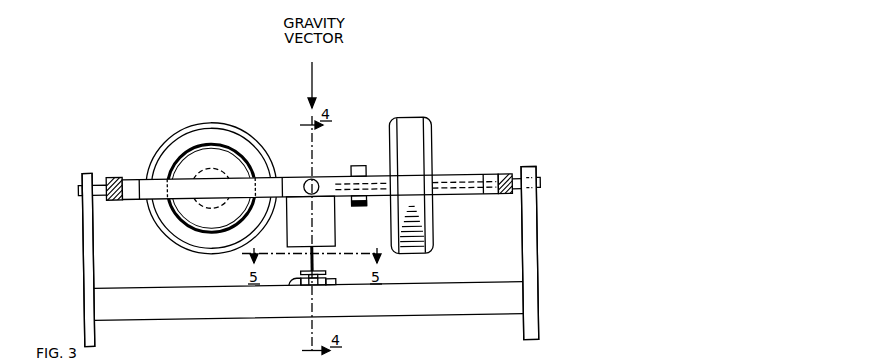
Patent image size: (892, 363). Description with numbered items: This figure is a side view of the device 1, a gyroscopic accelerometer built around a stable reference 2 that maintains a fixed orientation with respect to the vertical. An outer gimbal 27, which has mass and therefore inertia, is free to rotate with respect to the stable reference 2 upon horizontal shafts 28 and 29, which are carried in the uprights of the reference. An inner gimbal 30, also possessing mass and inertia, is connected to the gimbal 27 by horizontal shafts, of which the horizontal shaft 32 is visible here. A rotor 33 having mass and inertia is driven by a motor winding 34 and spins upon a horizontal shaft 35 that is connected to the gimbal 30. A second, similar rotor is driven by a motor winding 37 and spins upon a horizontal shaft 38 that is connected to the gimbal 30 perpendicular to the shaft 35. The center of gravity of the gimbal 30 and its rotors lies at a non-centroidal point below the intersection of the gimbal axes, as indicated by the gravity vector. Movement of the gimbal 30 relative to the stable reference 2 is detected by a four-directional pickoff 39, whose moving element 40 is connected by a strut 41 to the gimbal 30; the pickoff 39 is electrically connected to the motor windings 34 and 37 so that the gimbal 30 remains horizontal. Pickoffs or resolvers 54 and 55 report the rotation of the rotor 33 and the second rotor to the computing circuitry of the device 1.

The device 1 is at (555, 185).
The stable reference 2 is at (525, 294).
The gimbal 27 is at (508, 200).
The horizontal shaft 28 is at (94, 186).
The horizontal shaft 29 is at (520, 183).
The gimbal 30 is at (163, 193).
The horizontal shaft 32 is at (316, 181).
The rotor 33 is at (208, 152).
The motor winding 34 is at (237, 139).
The horizontal shaft 35 is at (215, 196).
The motor winding 37 is at (428, 132).
The horizontal shaft 38 is at (453, 185).
The four-directional pickoff 39 is at (330, 280).
The moving element 40 is at (310, 271).
The strut 41 is at (318, 262).
The resolver 54 is at (226, 168).
The resolver 55 is at (360, 167).